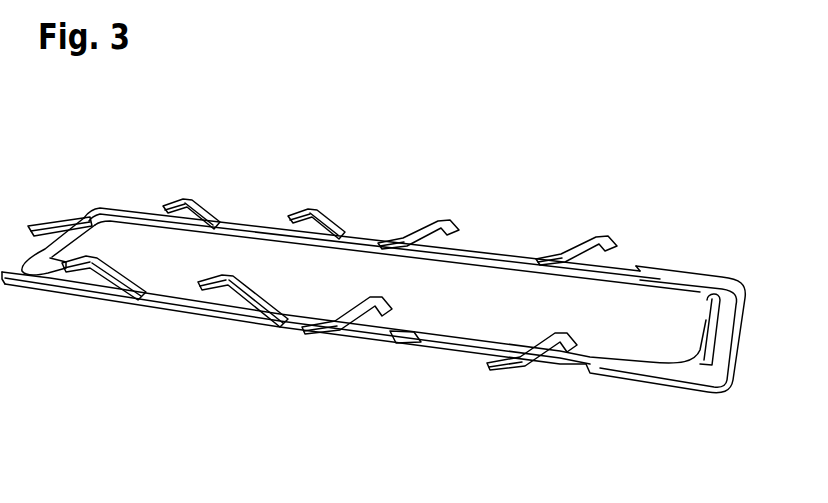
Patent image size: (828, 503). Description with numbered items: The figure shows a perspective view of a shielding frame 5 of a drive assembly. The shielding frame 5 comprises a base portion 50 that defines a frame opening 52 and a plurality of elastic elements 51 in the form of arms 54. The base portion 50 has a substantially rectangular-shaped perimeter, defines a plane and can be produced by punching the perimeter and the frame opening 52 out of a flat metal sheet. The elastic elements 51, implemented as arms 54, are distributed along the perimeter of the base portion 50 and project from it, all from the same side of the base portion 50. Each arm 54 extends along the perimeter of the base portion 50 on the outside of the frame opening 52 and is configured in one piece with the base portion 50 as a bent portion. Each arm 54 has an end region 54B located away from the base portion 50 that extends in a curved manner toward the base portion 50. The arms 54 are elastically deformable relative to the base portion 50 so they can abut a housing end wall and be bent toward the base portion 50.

The shielding frame 5 is at (605, 148).
The base portion 50 is at (622, 370).
The elastic elements 51 is at (62, 204).
The frame opening 52 is at (437, 256).
The arms 54 is at (200, 204).
The end region 54B is at (381, 331).